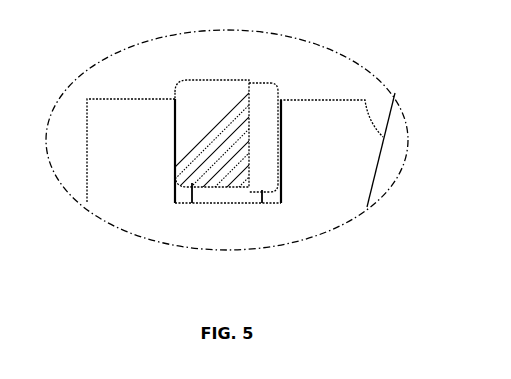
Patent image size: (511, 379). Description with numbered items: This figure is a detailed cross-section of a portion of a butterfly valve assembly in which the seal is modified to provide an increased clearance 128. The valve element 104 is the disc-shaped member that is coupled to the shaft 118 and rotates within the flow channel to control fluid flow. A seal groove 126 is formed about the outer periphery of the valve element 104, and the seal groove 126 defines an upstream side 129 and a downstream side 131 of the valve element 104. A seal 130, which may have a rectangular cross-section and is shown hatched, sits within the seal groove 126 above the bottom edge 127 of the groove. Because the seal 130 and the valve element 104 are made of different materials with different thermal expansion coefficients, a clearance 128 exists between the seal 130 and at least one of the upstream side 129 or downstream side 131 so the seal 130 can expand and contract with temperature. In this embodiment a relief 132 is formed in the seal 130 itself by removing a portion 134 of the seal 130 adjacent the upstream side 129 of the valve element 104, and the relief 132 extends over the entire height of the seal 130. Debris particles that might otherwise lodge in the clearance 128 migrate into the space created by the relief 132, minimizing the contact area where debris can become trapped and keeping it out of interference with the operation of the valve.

The valve element 104 is at (318, 208).
The shaft 118 is at (410, 139).
The seal groove 126 is at (175, 185).
The bottom edge 127 is at (222, 203).
The clearance 128 is at (174, 99).
The upstream side 129 is at (340, 113).
The seal 130 is at (216, 78).
The downstream side 131 is at (147, 108).
The relief 132 is at (279, 100).
The removed portion 134 is at (266, 85).